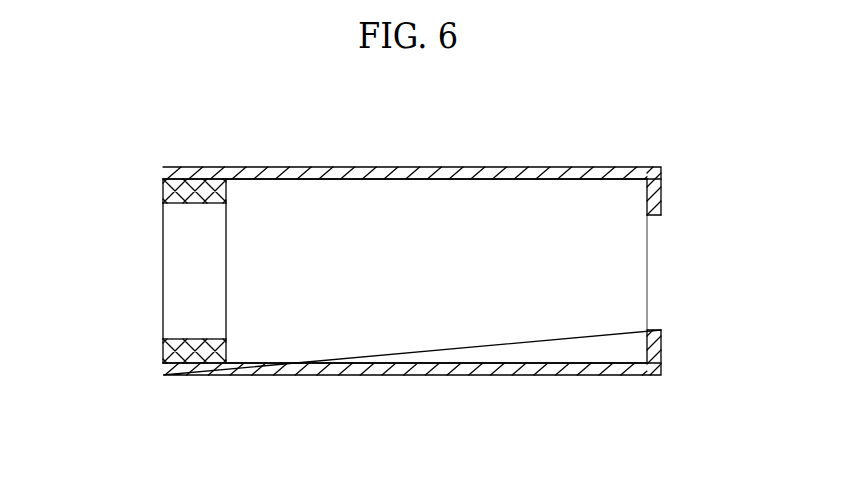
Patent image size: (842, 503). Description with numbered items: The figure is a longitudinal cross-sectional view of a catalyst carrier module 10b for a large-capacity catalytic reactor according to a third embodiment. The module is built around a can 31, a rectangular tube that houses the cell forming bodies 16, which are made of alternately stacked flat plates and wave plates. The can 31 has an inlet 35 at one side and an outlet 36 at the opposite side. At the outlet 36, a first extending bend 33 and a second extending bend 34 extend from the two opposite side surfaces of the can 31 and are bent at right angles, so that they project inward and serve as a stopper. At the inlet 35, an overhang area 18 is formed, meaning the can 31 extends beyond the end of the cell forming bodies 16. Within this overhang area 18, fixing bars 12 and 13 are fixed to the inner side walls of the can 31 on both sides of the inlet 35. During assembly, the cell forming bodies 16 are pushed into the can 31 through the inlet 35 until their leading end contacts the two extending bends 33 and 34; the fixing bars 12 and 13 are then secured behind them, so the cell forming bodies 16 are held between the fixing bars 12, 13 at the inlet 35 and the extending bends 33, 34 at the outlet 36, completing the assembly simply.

The catalyst carrier module 10b is at (660, 145).
The fixing bar 12 is at (166, 190).
The fixing bar 13 is at (172, 352).
The cell forming bodies 16 is at (353, 333).
The overhang area 18 is at (168, 302).
The can 31 is at (458, 368).
The first extending bend 33 is at (657, 197).
The second extending bend 34 is at (657, 353).
The inlet 35 is at (153, 250).
The outlet 36 is at (656, 263).